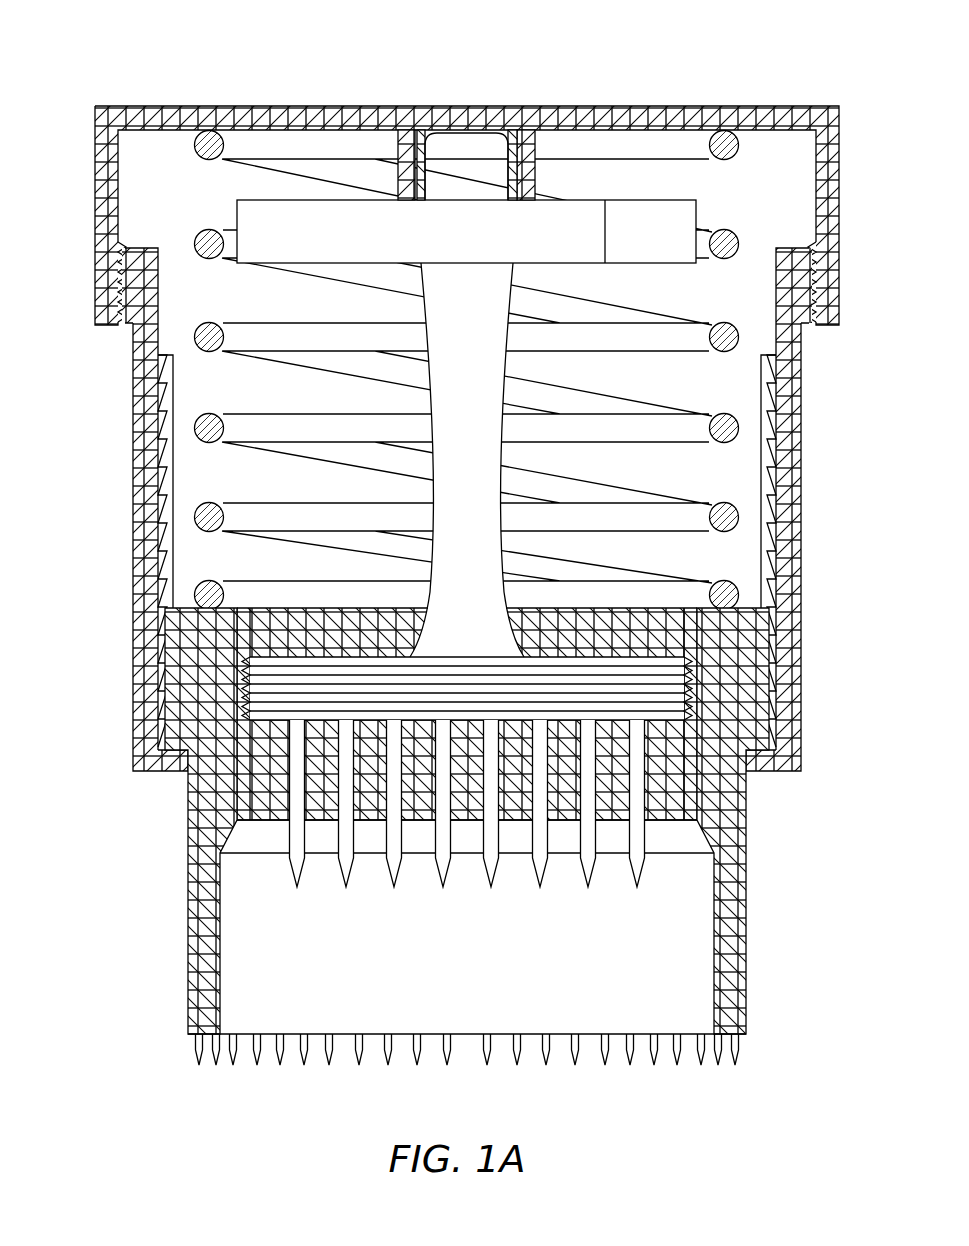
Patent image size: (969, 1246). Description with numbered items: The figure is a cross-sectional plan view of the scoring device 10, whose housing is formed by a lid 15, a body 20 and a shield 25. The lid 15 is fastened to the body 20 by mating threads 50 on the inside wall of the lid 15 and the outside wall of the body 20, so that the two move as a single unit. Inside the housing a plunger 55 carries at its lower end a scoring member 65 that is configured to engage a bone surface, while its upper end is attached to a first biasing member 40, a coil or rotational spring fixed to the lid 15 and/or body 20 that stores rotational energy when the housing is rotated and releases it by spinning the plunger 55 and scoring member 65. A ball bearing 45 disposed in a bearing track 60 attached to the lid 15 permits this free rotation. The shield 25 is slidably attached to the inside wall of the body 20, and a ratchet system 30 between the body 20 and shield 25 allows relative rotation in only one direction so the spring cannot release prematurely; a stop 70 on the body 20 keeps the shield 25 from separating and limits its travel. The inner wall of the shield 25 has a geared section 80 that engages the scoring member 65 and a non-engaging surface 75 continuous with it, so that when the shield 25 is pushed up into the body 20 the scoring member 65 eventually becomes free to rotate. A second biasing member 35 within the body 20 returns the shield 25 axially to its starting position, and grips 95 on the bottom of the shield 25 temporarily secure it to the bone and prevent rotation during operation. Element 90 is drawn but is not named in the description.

The scoring device 10 is at (445, 563).
The lid 15 is at (272, 106).
The body 20 is at (133, 577).
The shield 25 is at (198, 829).
The ratchet system 30 is at (160, 445).
The second biasing member 35 is at (290, 332).
The first biasing member 40 is at (633, 222).
The ball bearing 45 is at (480, 145).
The mating threads 50 is at (113, 291).
The plunger 55 is at (483, 361).
The bearing track 60 is at (513, 133).
The scoring member 65 is at (565, 738).
The stop 70 is at (153, 768).
The non-engaging surface 75 is at (220, 1010).
The geared section 80 is at (238, 640).
The needles 90 is at (643, 868).
The grips 95 is at (599, 1066).